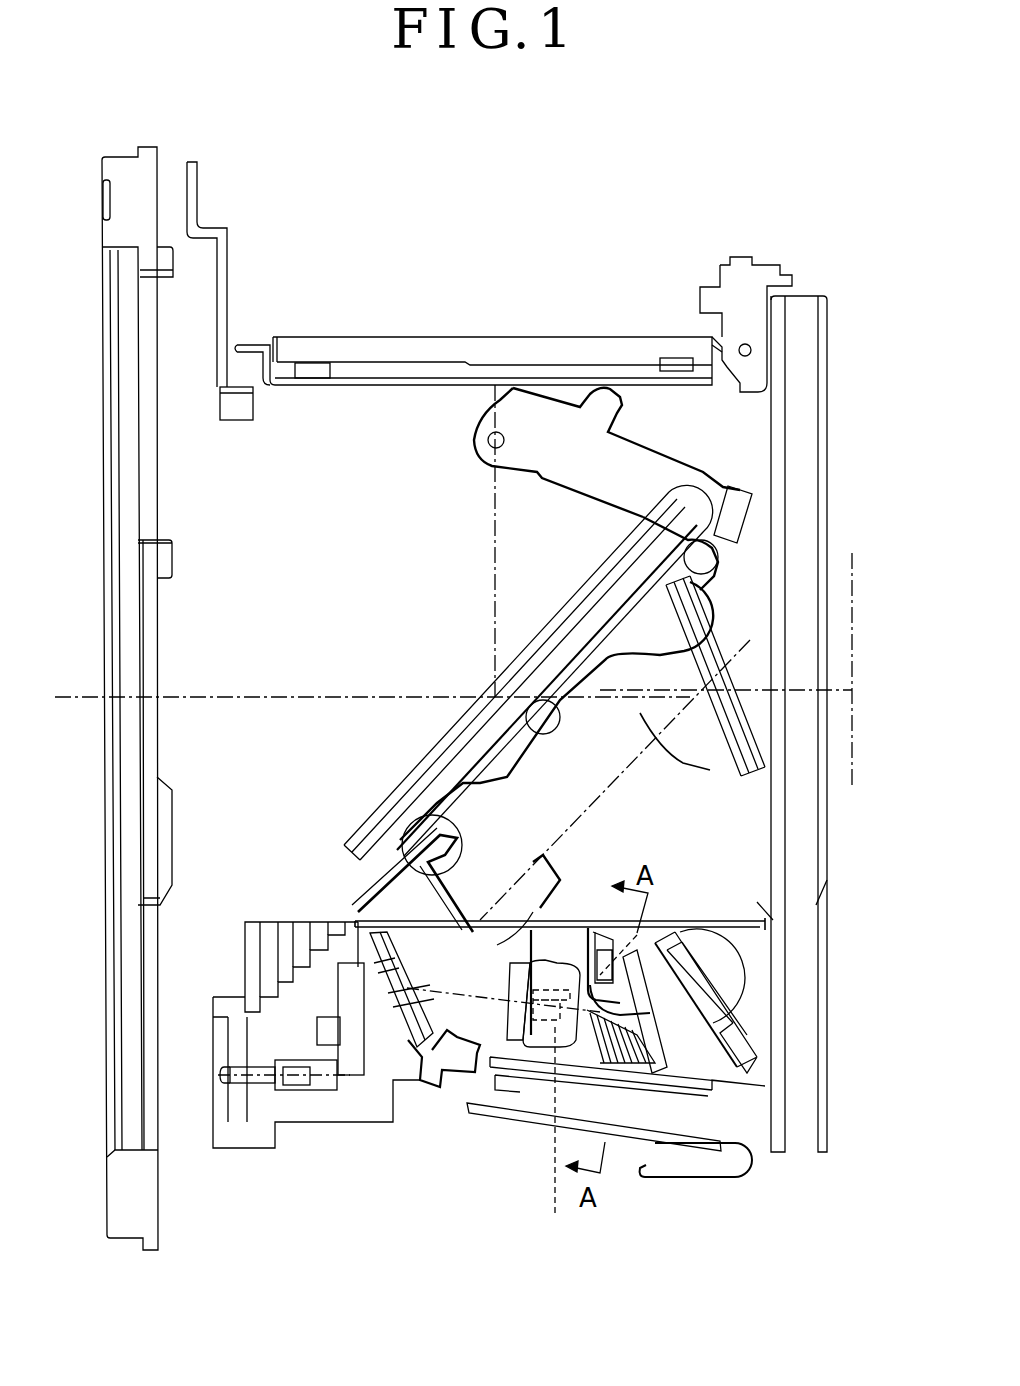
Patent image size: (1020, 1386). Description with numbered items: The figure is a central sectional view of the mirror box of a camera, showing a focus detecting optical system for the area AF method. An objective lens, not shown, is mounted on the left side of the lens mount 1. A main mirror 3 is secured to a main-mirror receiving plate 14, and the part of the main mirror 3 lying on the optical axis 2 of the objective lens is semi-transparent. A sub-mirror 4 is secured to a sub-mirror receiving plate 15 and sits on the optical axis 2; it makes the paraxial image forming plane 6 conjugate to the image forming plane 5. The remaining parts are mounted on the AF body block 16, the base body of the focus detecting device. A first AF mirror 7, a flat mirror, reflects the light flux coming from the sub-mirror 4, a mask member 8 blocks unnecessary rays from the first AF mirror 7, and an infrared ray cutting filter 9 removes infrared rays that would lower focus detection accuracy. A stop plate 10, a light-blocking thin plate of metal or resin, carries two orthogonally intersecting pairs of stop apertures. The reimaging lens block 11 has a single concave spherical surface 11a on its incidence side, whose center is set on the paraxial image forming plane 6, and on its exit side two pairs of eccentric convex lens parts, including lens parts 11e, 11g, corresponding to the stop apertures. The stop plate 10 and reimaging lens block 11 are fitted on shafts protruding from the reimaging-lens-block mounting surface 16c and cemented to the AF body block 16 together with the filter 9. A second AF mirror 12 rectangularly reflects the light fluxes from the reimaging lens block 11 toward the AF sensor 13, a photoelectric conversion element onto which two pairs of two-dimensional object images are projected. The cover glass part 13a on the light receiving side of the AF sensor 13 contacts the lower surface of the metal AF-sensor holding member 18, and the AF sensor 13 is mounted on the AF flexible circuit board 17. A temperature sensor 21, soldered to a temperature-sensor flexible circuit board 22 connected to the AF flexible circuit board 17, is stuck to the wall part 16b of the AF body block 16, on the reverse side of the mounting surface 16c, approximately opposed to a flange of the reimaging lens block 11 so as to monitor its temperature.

The lens mount 1 is at (112, 176).
The optical axis 2 is at (70, 708).
The main mirror 3 is at (388, 806).
The sub-mirror 4 is at (675, 642).
The image forming plane 5 is at (858, 660).
The paraxial image forming plane 6 is at (557, 770).
The first AF mirror 7 is at (352, 920).
The mask member 8 is at (418, 930).
The infrared ray cutting filter 9 is at (505, 965).
The stop plate 10 is at (507, 1060).
The reimaging lens block 11 is at (530, 1060).
The concave spherical surface 11a is at (457, 1060).
The lens part 11e is at (560, 963).
The lens part 11g is at (600, 1060).
The second AF mirror 12 is at (703, 1053).
The AF sensor 13 is at (710, 1127).
The cover glass part 13a is at (707, 1098).
The main-mirror receiving plate 14 is at (445, 775).
The sub-mirror receiving plate 15 is at (737, 737).
The AF body block 16 is at (417, 1052).
The wall part 16b is at (657, 1133).
The reimaging-lens-block mounting surface 16c is at (586, 1093).
The AF flexible circuit board 17 is at (748, 1163).
The AF-sensor holding member 18 is at (730, 1082).
The temperature sensor 21 is at (700, 953).
The temperature-sensor flexible circuit board 22 is at (665, 930).